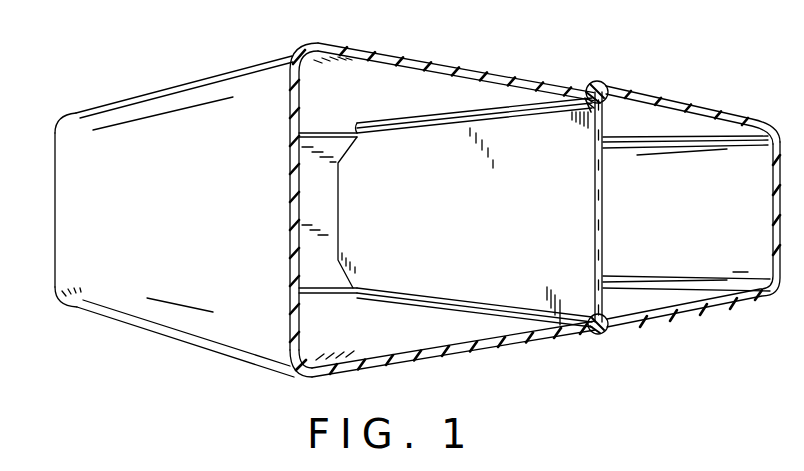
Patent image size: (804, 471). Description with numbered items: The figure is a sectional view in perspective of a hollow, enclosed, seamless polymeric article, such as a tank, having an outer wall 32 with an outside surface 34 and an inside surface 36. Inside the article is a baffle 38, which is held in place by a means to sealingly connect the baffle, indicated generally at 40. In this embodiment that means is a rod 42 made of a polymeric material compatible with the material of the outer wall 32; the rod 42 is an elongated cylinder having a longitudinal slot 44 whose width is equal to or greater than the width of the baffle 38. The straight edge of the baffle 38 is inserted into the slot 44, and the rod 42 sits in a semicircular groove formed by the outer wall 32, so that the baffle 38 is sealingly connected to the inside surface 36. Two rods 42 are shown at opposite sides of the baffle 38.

The outer wall 32 is at (410, 60).
The outside surface 34 is at (220, 123).
The inside surface 36 is at (405, 345).
The baffle 38 is at (580, 273).
The means to sealingly connect the baffle 40 is at (604, 78).
The rod 42 is at (593, 104).
The longitudinal slot 44 is at (611, 91).